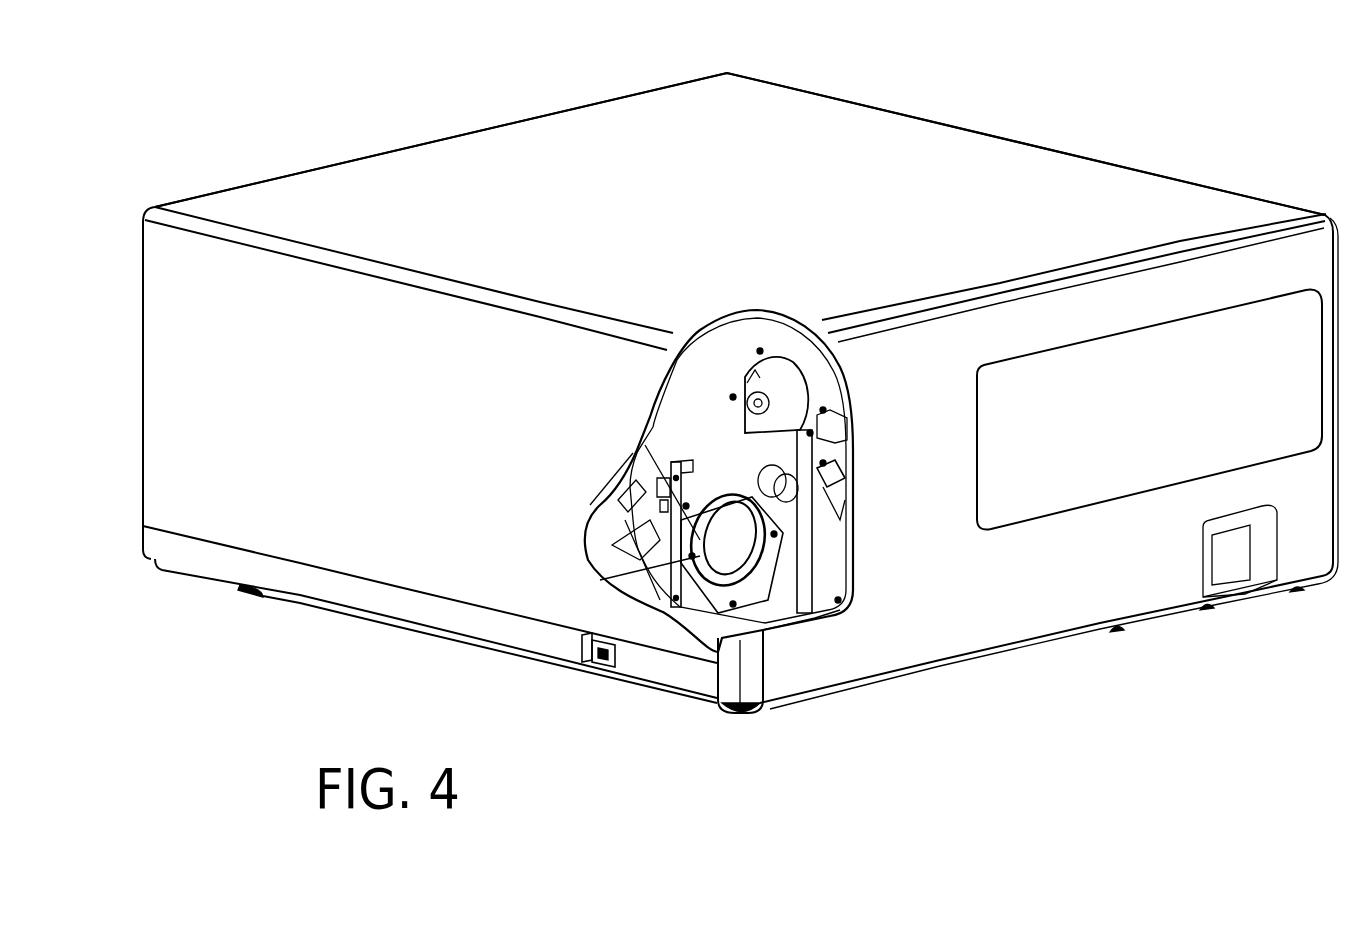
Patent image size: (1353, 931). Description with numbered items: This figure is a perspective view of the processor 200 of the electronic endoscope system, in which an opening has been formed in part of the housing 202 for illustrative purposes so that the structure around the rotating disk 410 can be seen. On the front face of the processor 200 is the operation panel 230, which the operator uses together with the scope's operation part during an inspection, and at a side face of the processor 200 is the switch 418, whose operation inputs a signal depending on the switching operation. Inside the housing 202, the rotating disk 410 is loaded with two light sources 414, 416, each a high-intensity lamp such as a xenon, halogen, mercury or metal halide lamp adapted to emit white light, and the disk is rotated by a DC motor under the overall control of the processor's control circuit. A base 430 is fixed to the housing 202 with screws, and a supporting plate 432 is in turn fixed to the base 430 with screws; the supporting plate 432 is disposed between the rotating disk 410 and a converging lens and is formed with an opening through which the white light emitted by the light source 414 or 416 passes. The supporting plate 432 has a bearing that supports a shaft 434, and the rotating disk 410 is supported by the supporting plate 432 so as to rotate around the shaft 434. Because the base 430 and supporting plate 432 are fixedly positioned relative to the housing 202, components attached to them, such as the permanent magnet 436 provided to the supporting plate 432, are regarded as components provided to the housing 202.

The processor 200 is at (926, 108).
The housing 202 is at (1115, 193).
The operation panel 230 is at (1127, 347).
The rotating disk 410 is at (688, 335).
The light source 414 is at (707, 580).
The light source 416 is at (778, 383).
The switch 418 is at (595, 657).
The base 430 is at (808, 620).
The supporting plate 432 is at (778, 578).
The shaft 434 is at (843, 500).
The permanent magnet 436 is at (668, 477).